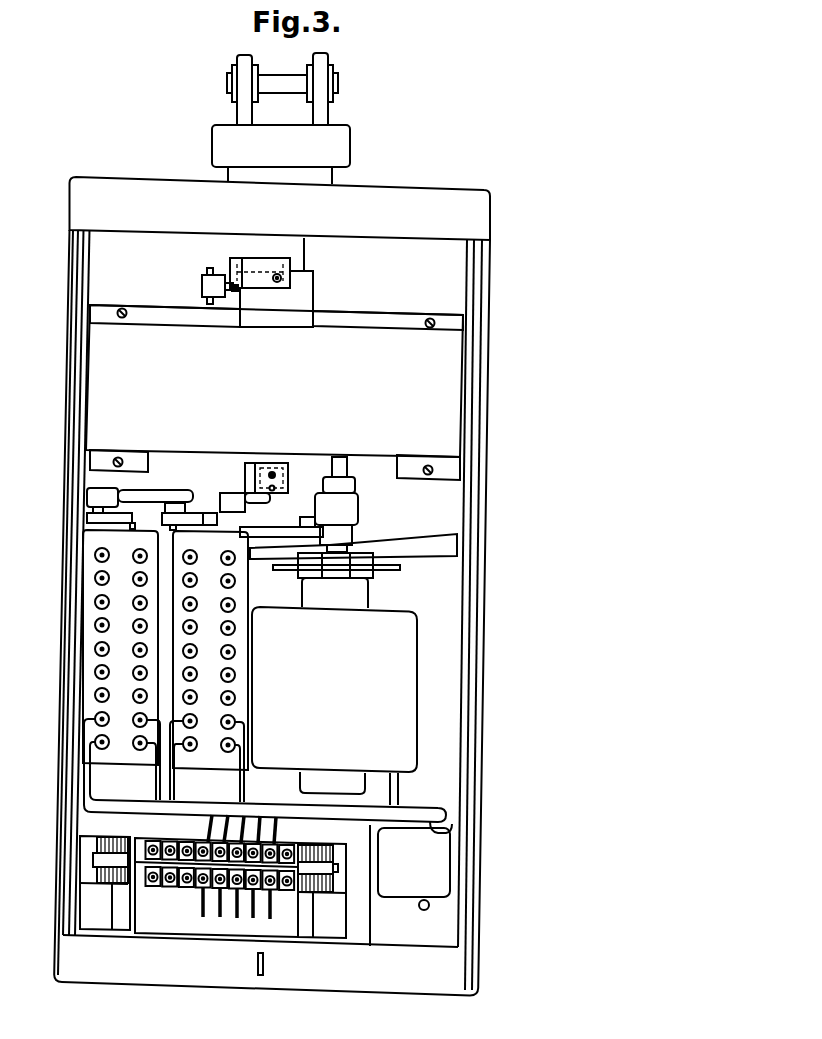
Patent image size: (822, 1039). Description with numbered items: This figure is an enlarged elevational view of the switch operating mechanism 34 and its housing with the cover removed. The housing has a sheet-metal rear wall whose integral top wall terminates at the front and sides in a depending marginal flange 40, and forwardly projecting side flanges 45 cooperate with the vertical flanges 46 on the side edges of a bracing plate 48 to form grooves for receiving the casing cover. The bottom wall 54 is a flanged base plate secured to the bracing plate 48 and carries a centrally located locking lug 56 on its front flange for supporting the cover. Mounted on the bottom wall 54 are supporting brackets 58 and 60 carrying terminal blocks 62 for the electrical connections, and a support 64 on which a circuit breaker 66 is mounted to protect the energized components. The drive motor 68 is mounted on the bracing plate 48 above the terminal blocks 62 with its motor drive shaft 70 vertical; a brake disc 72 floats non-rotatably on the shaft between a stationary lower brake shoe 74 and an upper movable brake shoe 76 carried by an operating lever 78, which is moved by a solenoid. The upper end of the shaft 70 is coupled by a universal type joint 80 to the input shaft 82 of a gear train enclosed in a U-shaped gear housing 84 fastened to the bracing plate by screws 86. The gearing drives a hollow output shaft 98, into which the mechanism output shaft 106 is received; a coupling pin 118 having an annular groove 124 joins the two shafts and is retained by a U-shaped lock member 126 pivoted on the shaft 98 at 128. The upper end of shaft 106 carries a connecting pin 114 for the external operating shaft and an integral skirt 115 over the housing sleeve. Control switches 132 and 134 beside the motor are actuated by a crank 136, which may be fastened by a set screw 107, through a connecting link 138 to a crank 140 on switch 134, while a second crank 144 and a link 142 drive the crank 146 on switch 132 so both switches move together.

The connecting pin 114 is at (294, 76).
The skirt 115 is at (340, 146).
The depending marginal flange 40 is at (482, 220).
The lock member 126 is at (242, 258).
The pivotal mounting of lock member 128 is at (290, 251).
The hollow output shaft 106 is at (304, 249).
The coupling pin 118 is at (203, 287).
The hollow output shaft of gear train 98 is at (313, 292).
The annular groove 124 is at (239, 290).
The screws 86 is at (122, 312).
The vertical flanges 46 is at (82, 404).
The gear housing 84 is at (452, 398).
The side flanges 45 is at (75, 457).
The set screw 107 is at (273, 472).
The crank 136 is at (246, 470).
The input shaft 82 is at (347, 468).
The link 142 is at (132, 499).
The second crank 144 is at (198, 512).
The crank 146 is at (87, 517).
The connecting link 138 is at (247, 504).
The operating lever 78 is at (304, 527).
The universal type joint 80 is at (358, 508).
The crank 140 is at (250, 528).
The motor drive shaft 70 is at (356, 550).
The upper movable brake shoe 76 is at (400, 569).
The lower brake shoe 74 is at (298, 573).
The brake disc 72 is at (397, 572).
The operating mechanism 34 is at (521, 603).
The control switch 132 is at (86, 624).
The control switch 134 is at (240, 647).
The bracing plate 48 is at (452, 647).
The drive motor 68 is at (407, 722).
The terminal blocks 62 is at (85, 852).
The circuit breaker 66 is at (405, 886).
The support 64 is at (445, 923).
The supporting bracket 60 is at (93, 927).
The supporting bracket 58 is at (173, 923).
The locking lug 56 is at (263, 963).
The bottom wall 54 is at (400, 988).